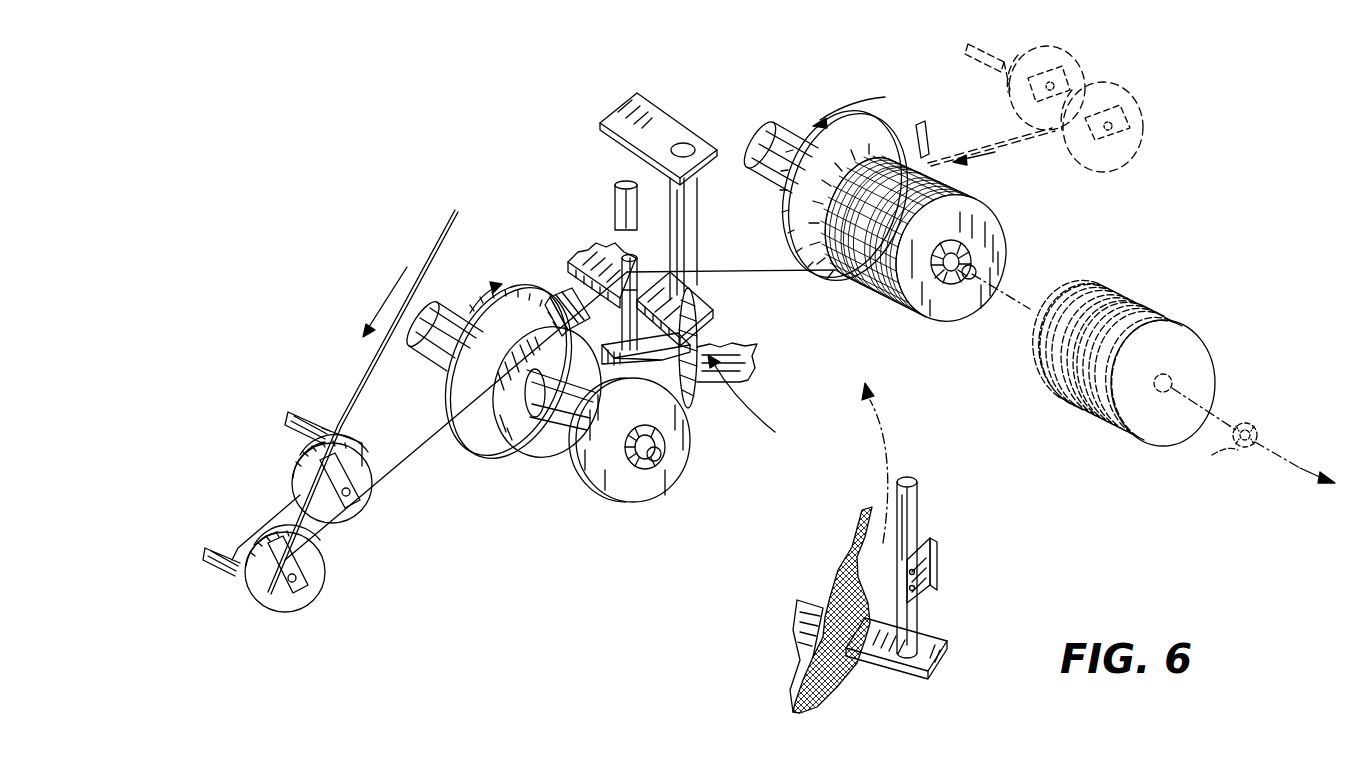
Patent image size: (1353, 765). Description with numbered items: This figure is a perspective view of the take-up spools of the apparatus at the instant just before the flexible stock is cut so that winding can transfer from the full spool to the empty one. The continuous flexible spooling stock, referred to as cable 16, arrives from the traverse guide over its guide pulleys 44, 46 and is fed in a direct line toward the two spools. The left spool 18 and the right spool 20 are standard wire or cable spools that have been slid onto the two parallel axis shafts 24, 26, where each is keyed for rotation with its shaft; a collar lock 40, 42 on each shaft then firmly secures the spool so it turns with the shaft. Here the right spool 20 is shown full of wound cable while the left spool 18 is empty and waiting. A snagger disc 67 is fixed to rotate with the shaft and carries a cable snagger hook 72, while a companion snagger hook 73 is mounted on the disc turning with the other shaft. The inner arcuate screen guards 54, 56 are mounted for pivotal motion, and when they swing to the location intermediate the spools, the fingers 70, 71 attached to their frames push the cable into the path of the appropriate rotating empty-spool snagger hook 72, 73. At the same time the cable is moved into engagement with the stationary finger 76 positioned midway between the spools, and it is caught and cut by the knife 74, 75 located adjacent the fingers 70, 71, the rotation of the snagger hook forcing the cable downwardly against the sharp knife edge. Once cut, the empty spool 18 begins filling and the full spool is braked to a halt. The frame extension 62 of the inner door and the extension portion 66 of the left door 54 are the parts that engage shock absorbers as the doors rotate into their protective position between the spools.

The cable 16 is at (418, 448).
The left spool 18 is at (592, 487).
The right spool 20 is at (988, 222).
The parallel axis shaft 24 is at (665, 455).
The parallel axis shaft 26 is at (976, 263).
The collar lock 40 is at (645, 470).
The collar lock 42 is at (966, 278).
The guide pulley 44 is at (303, 596).
The guide pulley 46 is at (365, 460).
The inner arcuate screen guard 54 is at (840, 678).
The inner arcuate screen guard 56 is at (694, 343).
The frame extension of inner door 62 is at (680, 390).
The extension portion 66 is at (937, 638).
The snagger disc 67 is at (515, 351).
The finger 70 is at (917, 496).
The finger 71 is at (615, 205).
The cable snagger hook 72 is at (563, 300).
The cable snagger hook 73 is at (926, 150).
The knife 74 is at (937, 557).
The knife 75 is at (633, 260).
The stationary finger 76 is at (698, 210).